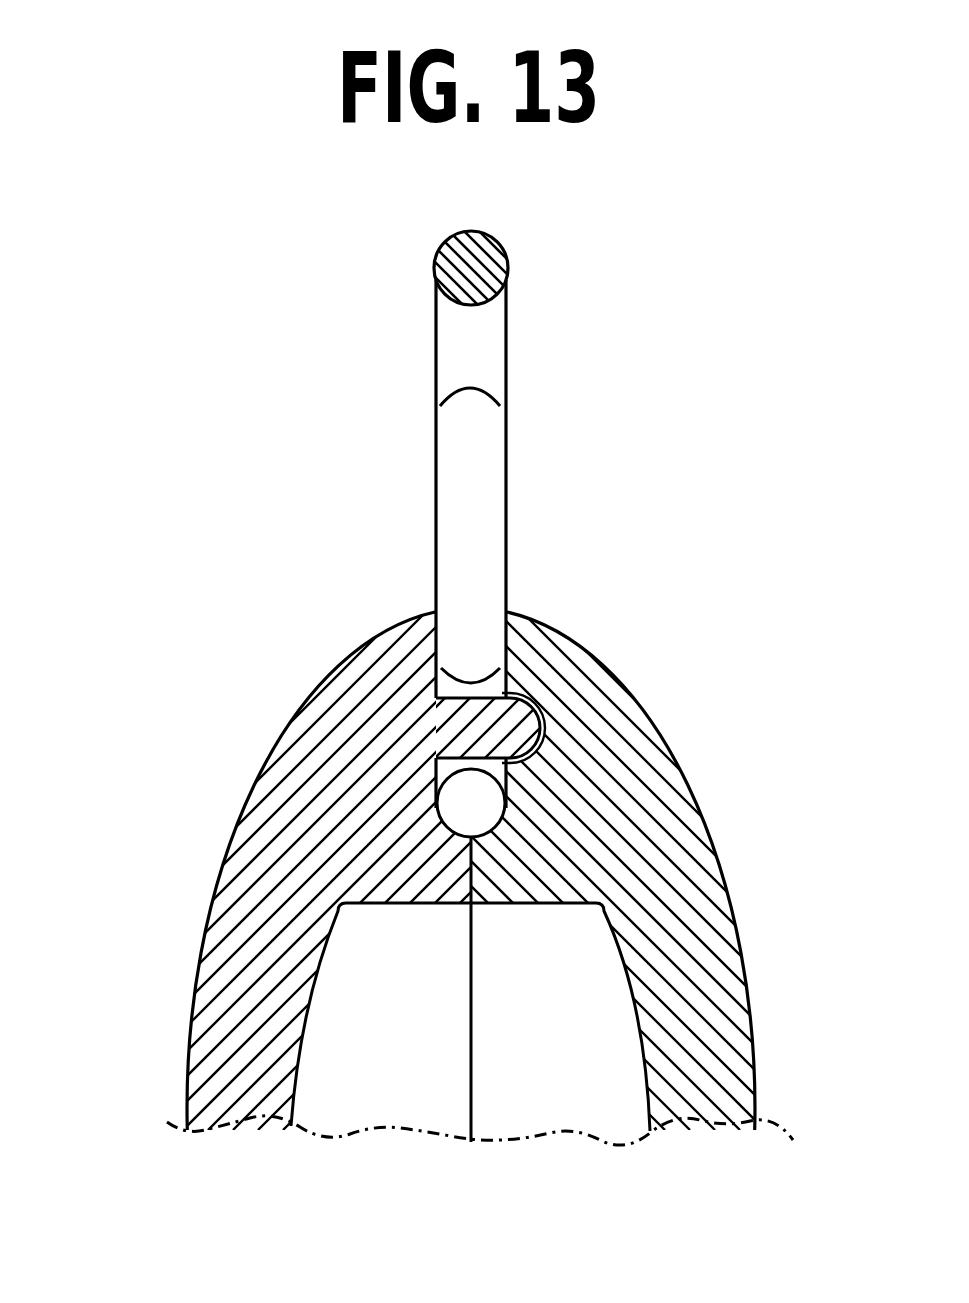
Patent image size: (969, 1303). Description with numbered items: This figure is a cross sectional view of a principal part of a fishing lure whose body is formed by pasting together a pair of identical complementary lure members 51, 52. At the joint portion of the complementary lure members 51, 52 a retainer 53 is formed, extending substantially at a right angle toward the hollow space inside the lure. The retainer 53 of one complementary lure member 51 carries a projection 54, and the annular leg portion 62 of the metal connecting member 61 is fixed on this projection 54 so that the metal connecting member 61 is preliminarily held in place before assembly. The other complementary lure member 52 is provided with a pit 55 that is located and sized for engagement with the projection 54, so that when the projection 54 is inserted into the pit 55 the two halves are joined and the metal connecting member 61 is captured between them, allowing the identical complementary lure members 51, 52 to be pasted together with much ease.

The complementary lure member 51 is at (233, 838).
The complementary lure member 52 is at (707, 827).
The retainer 53 is at (396, 903).
The projection 54 is at (473, 696).
The pit 55 is at (543, 735).
The metal connecting member 61 is at (506, 270).
The annular leg portion 62 is at (460, 799).